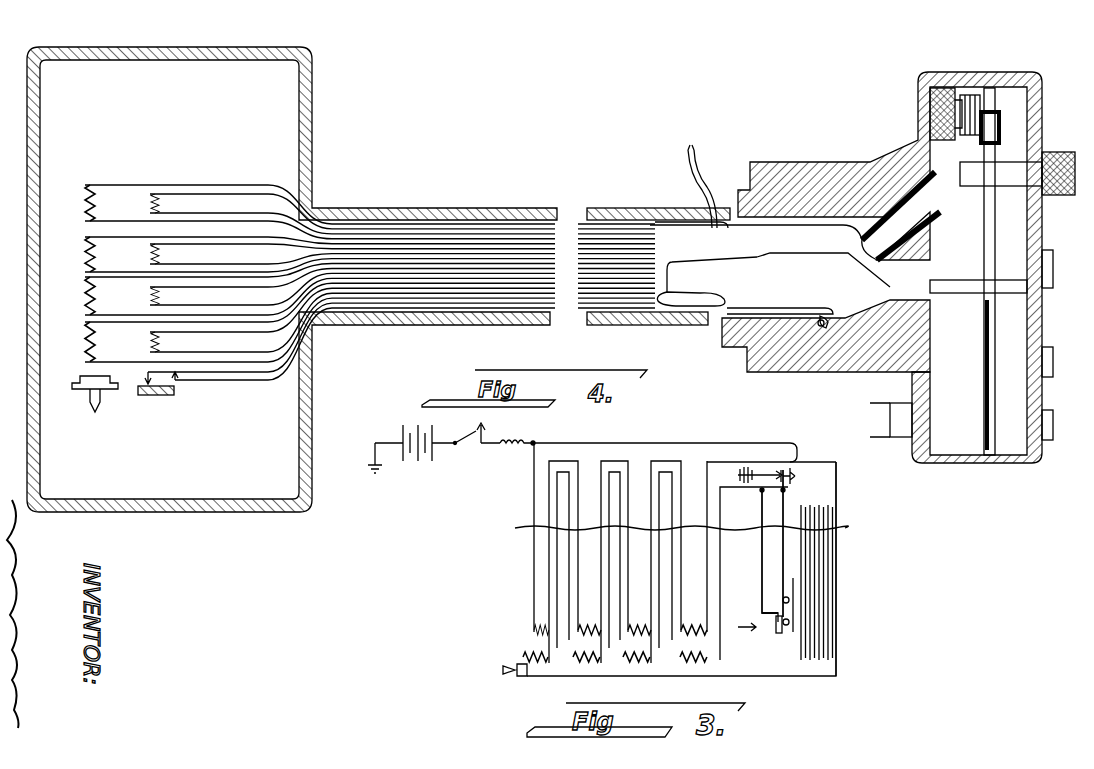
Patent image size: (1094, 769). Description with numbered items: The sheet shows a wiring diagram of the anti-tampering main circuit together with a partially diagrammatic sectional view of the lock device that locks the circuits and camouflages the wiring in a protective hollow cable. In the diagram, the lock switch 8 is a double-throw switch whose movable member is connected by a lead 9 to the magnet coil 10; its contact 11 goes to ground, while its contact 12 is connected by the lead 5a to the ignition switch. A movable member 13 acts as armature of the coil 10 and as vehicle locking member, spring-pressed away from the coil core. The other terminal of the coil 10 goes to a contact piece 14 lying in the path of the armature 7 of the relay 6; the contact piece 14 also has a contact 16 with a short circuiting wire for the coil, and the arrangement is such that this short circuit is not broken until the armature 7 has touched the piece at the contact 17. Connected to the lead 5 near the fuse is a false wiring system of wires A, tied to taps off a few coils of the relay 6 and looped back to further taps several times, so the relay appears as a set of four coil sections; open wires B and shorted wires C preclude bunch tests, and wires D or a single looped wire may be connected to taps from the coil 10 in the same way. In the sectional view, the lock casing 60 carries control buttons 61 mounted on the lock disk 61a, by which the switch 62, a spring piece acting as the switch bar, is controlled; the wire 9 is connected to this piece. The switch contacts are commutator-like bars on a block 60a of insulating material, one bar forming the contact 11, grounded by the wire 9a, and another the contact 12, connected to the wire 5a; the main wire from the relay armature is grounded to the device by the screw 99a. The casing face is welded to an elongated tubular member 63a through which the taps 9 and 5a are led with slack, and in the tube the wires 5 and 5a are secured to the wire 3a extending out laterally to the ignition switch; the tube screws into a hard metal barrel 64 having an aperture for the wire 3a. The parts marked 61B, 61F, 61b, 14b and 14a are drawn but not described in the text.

In FIG. 4, the wire 3a is at (706, 160).
In FIG. 4, the lead 5 is at (678, 226).
In FIG. 3, the lead 5 is at (538, 443).
In FIG. 4, the lead 5a is at (785, 232).
In FIG. 3, the lead 5a is at (660, 448).
In FIG. 4, the lead 9 is at (845, 248).
In FIG. 3, the lead 9 is at (785, 555).
In FIG. 4, the wire 9a is at (828, 312).
In FIG. 4, the terminal strip 61B is at (795, 248).
In FIG. 4, the terminal strip 61F is at (775, 287).
In FIG. 4, the barrel 64 is at (695, 327).
In FIG. 4, the screw 99a is at (820, 328).
In FIG. 4, the tubular member 63a is at (866, 372).
In FIG. 4, the lock casing 60 is at (1000, 465).
In FIG. 4, the block of insulating material 60a is at (930, 95).
In FIG. 4, the contact 11 is at (968, 95).
In FIG. 3, the contact 11 is at (777, 472).
In FIG. 4, the switch 62 is at (1000, 128).
In FIG. 4, the control button 61 is at (1053, 268).
In FIG. 4, the lock disk 61a is at (1040, 390).
In FIG. 4, the terminal 61b is at (1080, 148).
In FIG. 3, the lock switch 8 is at (783, 472).
In FIG. 3, the contact 12 is at (795, 474).
In FIG. 3, the frame wall 14b is at (840, 470).
In FIG. 3, the wires A is at (533, 505).
In FIG. 3, the wires D is at (578, 572).
In FIG. 3, the relay 6 is at (692, 624).
In FIG. 3, the movable member 13 is at (508, 664).
In FIG. 3, the magnet coil 10 is at (695, 662).
In FIG. 3, the contact 16 is at (790, 600).
In FIG. 3, the contact bar 14a is at (838, 600).
In FIG. 3, the shorted wires C is at (820, 630).
In FIG. 3, the open wires B is at (800, 645).
In FIG. 3, the contact piece 14 is at (790, 628).
In FIG. 3, the contact 17 is at (783, 635).
In FIG. 3, the armature 7 is at (766, 625).